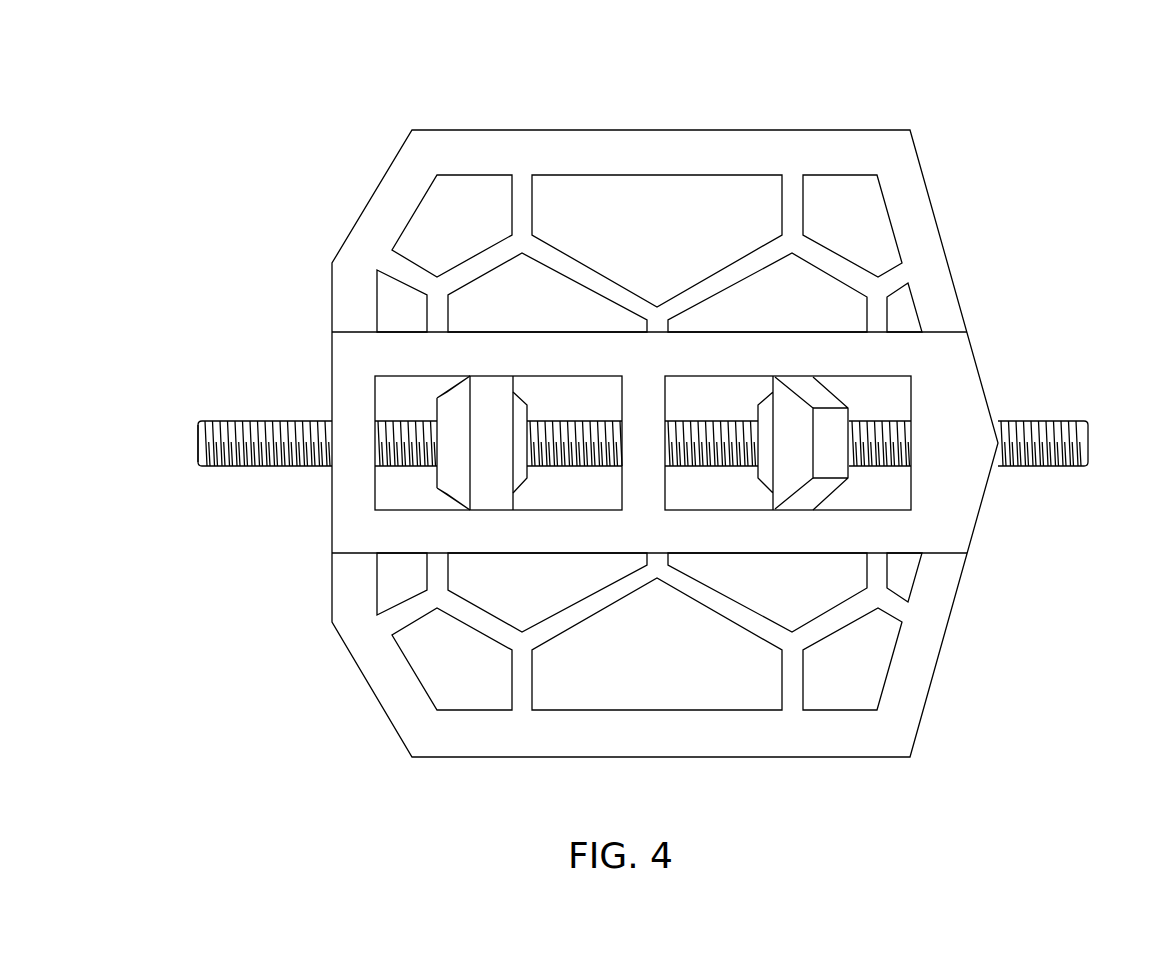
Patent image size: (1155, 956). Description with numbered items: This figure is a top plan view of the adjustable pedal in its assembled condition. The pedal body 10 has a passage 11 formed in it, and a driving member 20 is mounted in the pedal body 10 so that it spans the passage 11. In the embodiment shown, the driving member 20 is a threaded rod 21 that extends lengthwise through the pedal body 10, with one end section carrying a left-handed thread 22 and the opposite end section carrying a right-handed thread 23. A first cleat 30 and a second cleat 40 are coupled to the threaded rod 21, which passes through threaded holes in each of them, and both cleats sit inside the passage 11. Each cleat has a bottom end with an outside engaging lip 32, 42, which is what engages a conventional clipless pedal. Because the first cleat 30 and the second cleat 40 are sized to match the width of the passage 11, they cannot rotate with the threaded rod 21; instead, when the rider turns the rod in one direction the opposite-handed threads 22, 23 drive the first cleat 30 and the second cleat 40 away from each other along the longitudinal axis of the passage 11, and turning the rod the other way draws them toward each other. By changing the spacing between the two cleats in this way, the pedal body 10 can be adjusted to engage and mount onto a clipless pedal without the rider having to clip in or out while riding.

The pedal body 10 is at (438, 126).
The passage 11 is at (397, 393).
The driving member 20 is at (605, 449).
The threaded rod 21 is at (197, 442).
The left-handed thread 22 is at (232, 427).
The right-handed thread 23 is at (1047, 421).
The first cleat 30 is at (902, 390).
The outside engaging lip 32 is at (792, 397).
The second cleat 40 is at (381, 376).
The outside engaging lip 42 is at (488, 392).